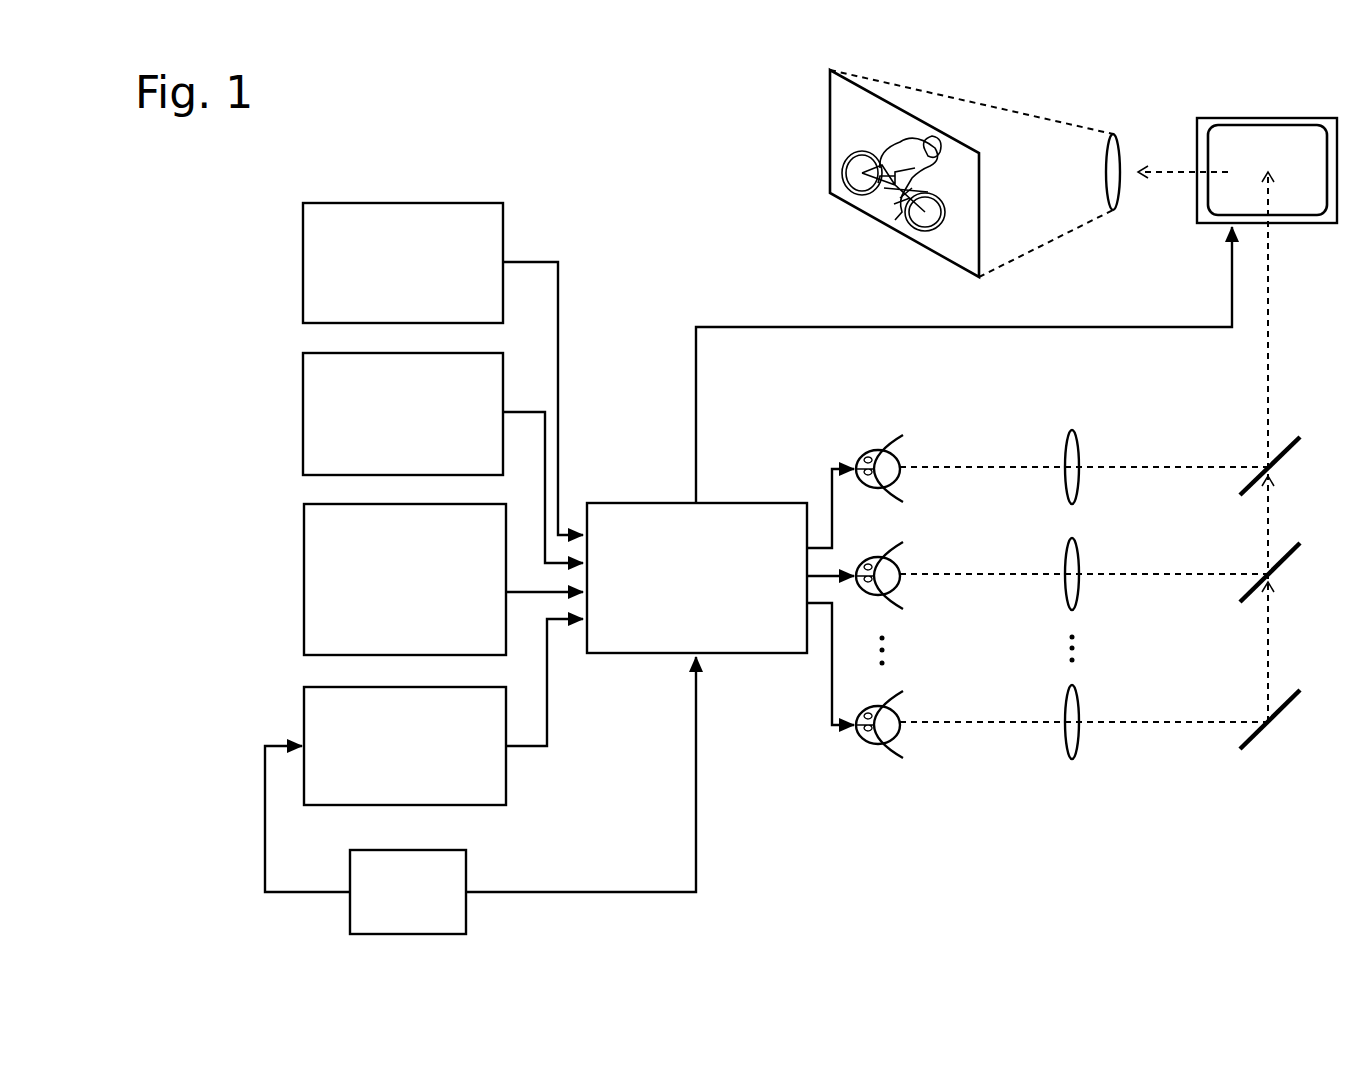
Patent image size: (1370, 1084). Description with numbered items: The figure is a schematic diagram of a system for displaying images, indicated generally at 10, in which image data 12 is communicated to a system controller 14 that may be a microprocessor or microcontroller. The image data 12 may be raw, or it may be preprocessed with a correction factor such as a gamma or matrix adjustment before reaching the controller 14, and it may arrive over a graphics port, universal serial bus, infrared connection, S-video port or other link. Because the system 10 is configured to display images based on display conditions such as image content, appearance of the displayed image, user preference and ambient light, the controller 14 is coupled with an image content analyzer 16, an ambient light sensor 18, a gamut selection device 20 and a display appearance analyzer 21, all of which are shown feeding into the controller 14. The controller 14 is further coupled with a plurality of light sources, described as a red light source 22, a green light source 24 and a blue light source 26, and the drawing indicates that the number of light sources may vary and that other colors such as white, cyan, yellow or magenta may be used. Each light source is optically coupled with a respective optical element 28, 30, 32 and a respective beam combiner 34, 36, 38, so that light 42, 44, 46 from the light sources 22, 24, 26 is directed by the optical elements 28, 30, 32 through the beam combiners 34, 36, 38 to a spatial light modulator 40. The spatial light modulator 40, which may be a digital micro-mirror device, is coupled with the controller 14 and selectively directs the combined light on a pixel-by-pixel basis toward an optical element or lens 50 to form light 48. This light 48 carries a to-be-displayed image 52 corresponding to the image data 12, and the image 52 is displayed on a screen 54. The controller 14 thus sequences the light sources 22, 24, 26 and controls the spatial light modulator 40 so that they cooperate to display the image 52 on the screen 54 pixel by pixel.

The system for displaying images 10 is at (668, 126).
The image data 12 is at (466, 873).
The system controller 14 is at (780, 502).
The image content analyzer 16 is at (304, 708).
The ambient light sensor 18 is at (304, 526).
The gamut selection device 20 is at (303, 376).
The display appearance analyzer 21 is at (303, 228).
The red light source 22 is at (938, 442).
The green light source 24 is at (938, 548).
The blue light source 26 is at (938, 695).
The optical element 28 is at (1042, 442).
The optical element 30 is at (1042, 548).
The optical element 32 is at (1044, 687).
The beam combiner 34 is at (1290, 452).
The beam combiner 36 is at (1290, 558).
The beam combiner 38 is at (1290, 704).
The spatial light modulator 40 is at (1288, 118).
The light 42 is at (1150, 466).
The light 44 is at (1150, 573).
The light 46 is at (1150, 721).
The light 48 is at (1228, 147).
The optical element 50 is at (1116, 195).
The image 52 is at (935, 172).
The screen 54 is at (960, 238).